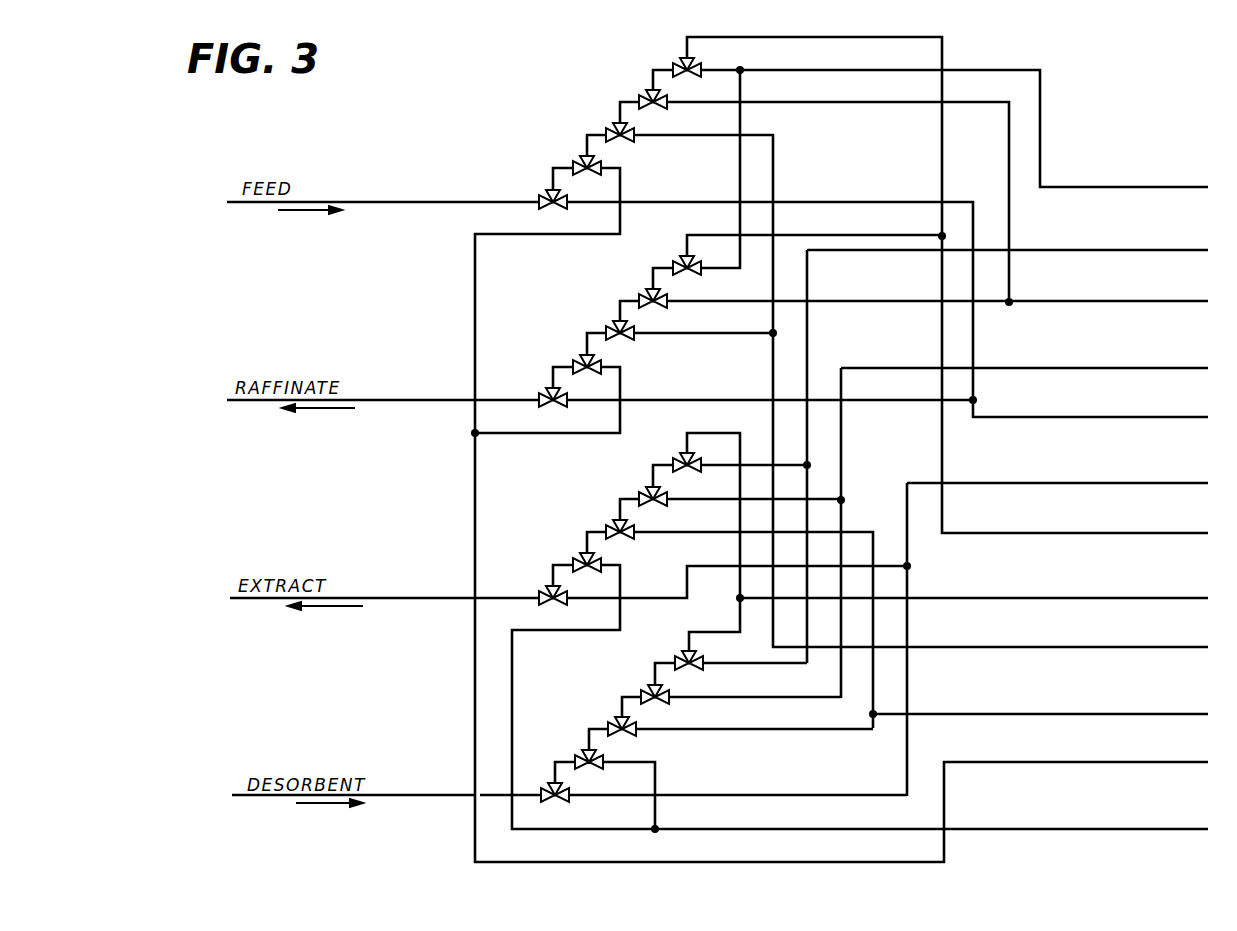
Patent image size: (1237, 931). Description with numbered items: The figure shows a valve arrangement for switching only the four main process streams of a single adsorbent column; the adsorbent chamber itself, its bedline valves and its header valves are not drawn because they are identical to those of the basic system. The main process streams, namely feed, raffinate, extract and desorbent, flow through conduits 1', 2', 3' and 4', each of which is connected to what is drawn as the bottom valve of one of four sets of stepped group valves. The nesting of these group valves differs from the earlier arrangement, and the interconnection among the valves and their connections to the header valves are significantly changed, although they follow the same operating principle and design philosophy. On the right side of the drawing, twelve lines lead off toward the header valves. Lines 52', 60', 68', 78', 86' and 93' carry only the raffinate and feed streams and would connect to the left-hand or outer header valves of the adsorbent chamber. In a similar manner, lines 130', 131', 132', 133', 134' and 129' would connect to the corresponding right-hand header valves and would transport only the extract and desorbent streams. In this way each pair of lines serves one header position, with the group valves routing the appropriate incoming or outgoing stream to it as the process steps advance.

The conduit 1' is at (383, 180).
The conduit 2' is at (383, 385).
The conduit 3' is at (384, 584).
The conduit 4' is at (386, 782).
The line 52' is at (954, 129).
The line 130' is at (1007, 443).
The line 60' is at (937, 203).
The line 131' is at (1024, 520).
The line 68' is at (887, 310).
The line 132' is at (1057, 626).
The line 78' is at (947, 286).
The line 133' is at (974, 586).
The line 86' is at (921, 392).
The line 134' is at (921, 630).
The line 93' is at (841, 515).
The line 129' is at (860, 698).